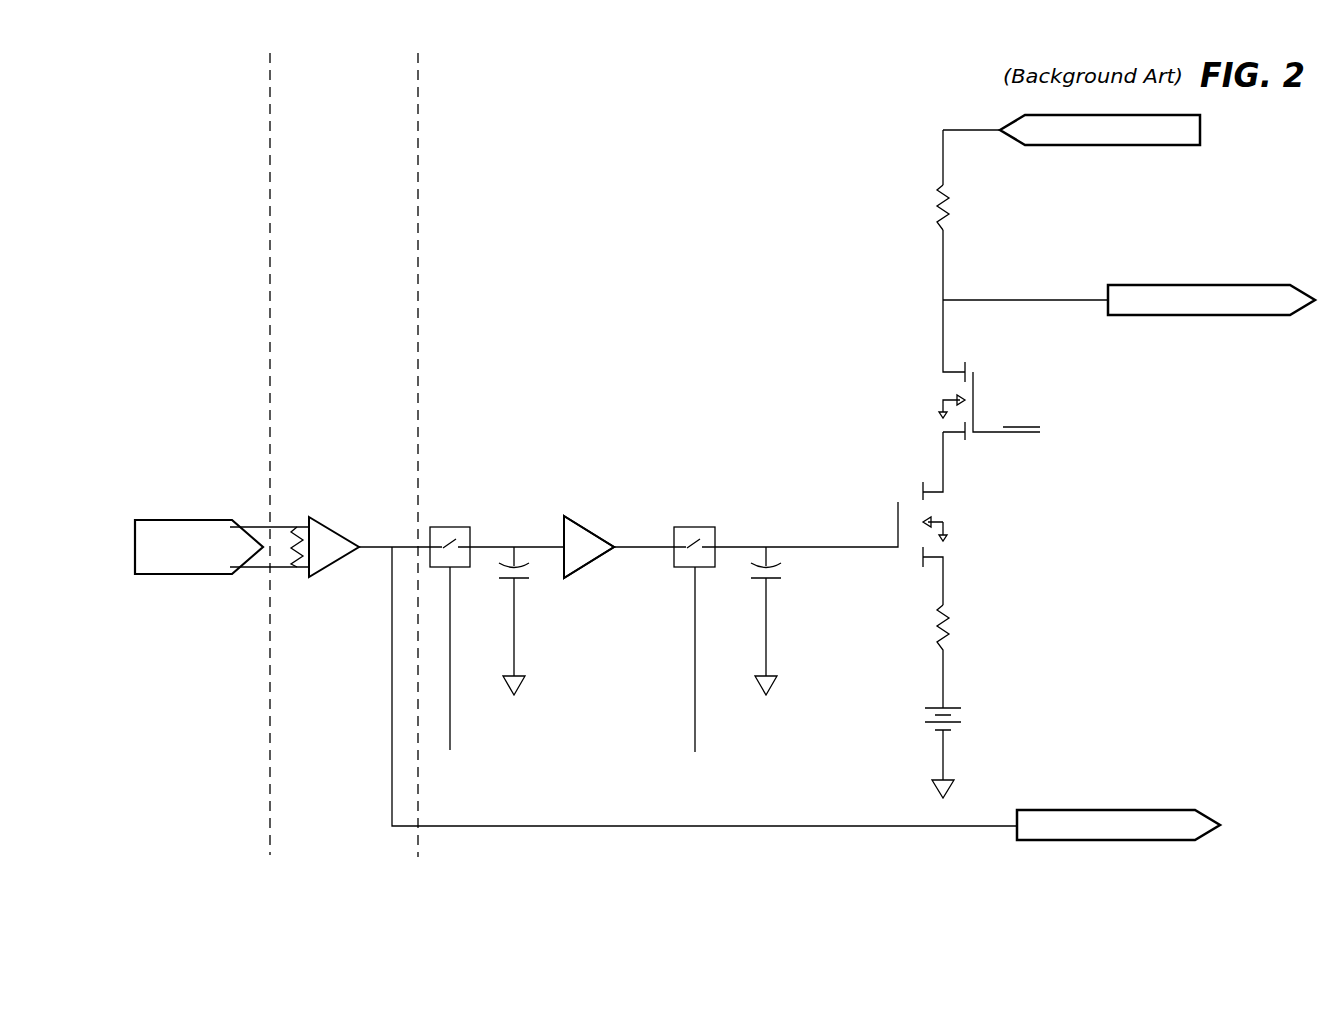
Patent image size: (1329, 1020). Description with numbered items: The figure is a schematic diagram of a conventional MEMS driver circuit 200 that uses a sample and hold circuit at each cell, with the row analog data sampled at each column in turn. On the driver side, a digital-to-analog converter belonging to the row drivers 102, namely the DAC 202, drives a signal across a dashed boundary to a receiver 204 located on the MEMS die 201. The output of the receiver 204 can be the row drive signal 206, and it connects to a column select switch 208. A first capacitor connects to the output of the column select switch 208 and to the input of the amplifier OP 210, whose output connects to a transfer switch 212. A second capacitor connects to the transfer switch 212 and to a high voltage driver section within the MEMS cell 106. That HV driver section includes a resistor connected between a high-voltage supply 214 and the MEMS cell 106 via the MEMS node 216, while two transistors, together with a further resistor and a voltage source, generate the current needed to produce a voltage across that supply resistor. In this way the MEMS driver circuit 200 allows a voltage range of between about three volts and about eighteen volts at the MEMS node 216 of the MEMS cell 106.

The row drivers 102 is at (217, 155).
The MEMS die 201 is at (345, 175).
The MEMS cell 106 is at (730, 155).
The MEMS driver circuit 200 is at (355, 841).
The digital-to-analog converter 202 is at (202, 575).
The receiver 204 is at (347, 543).
The row drive signal 206 is at (1110, 808).
The column select switch 208 is at (465, 820).
The amplifier OP 210 is at (586, 523).
The transfer switch 212 is at (712, 805).
The high-voltage supply 214 is at (1172, 148).
The MEMS node 216 is at (1258, 318).